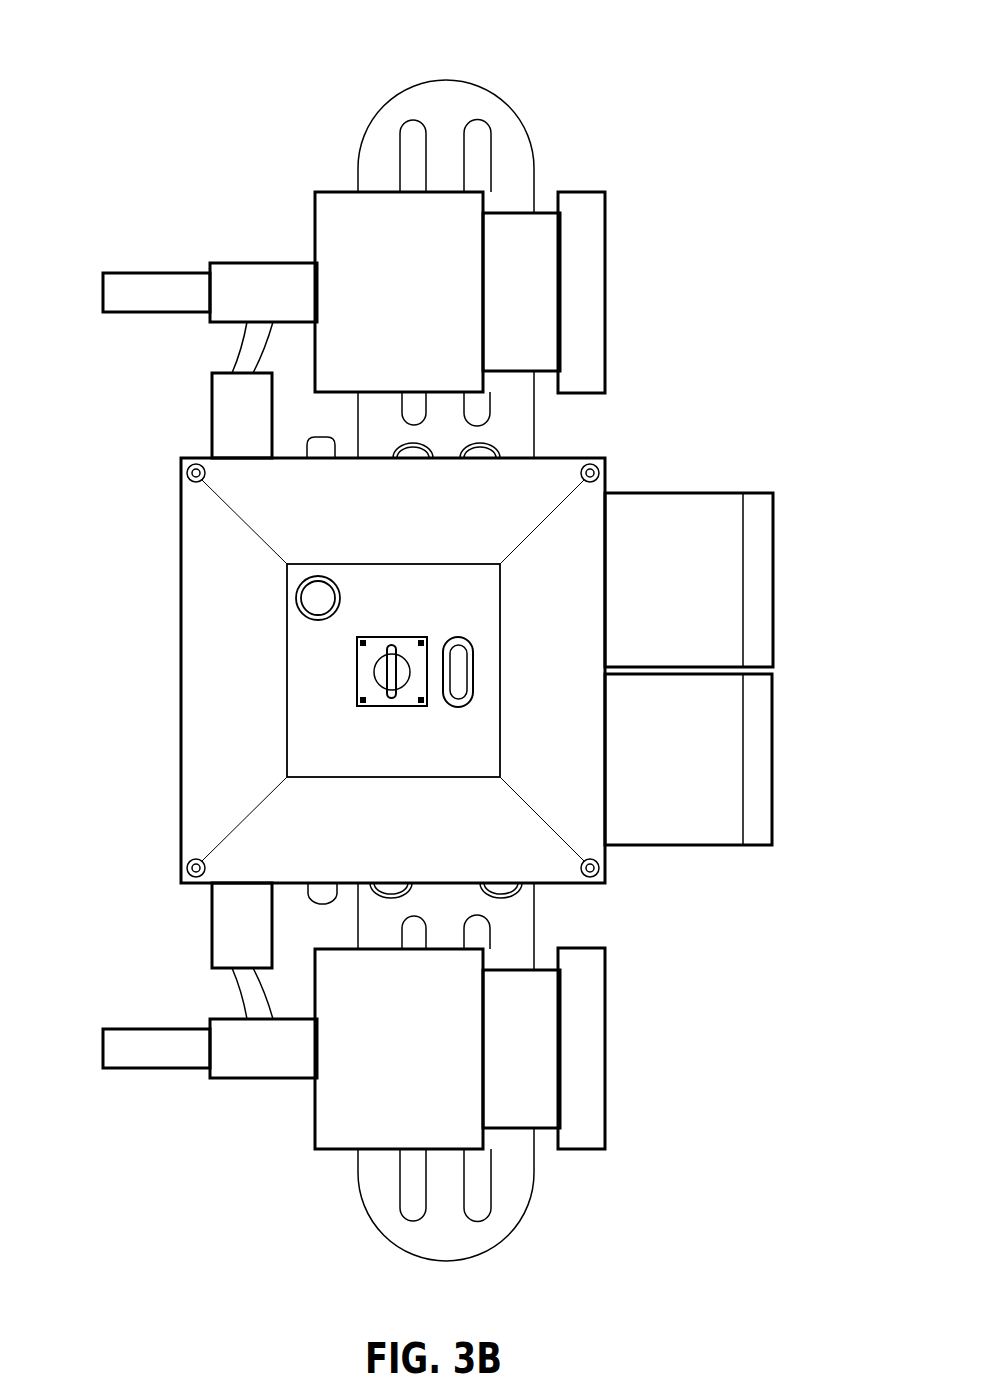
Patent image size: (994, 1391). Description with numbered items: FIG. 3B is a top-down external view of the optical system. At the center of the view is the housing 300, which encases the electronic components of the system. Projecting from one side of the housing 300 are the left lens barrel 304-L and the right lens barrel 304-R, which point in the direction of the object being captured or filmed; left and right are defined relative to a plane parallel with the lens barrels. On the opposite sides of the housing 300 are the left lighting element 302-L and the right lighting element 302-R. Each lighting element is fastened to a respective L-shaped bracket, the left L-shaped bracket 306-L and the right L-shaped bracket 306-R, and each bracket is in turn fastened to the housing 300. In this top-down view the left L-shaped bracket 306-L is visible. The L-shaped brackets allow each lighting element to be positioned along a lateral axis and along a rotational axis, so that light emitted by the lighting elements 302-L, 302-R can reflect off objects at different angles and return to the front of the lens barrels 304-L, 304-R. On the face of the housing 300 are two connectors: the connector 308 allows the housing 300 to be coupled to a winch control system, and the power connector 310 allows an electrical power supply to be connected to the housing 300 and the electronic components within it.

The housing 300 is at (157, 639).
The left lighting element 302-L is at (627, 267).
The right lighting element 302-R is at (627, 1073).
The left lens barrel 304-L is at (700, 485).
The right lens barrel 304-R is at (680, 868).
The left L-shaped bracket 306-L is at (500, 87).
The right L-shaped bracket 306-R is at (508, 1242).
The connector 308 is at (338, 694).
The power connector 310 is at (268, 585).